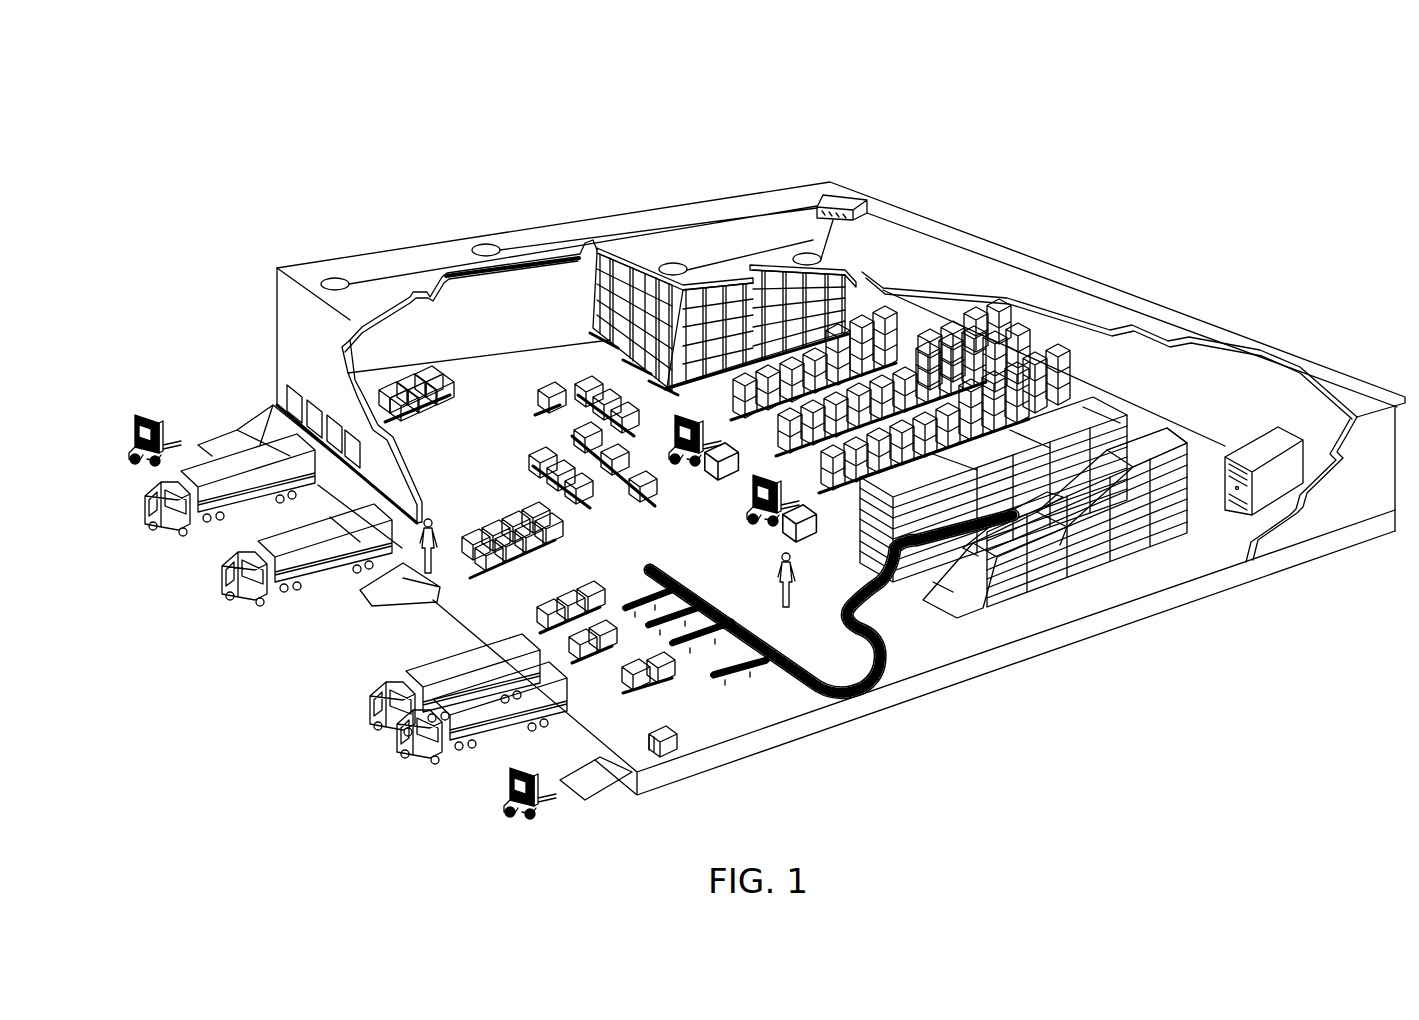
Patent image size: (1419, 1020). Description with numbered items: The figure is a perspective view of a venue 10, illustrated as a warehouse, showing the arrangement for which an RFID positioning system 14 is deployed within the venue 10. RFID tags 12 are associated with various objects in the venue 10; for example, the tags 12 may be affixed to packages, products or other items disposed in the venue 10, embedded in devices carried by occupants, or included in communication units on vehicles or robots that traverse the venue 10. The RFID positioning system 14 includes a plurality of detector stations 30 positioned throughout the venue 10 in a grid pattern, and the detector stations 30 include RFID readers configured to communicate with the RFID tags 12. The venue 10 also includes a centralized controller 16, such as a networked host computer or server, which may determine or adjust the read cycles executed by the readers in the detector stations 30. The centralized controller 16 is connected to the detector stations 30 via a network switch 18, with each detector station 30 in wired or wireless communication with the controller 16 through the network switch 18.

The venue 10 is at (1019, 236).
The RFID tags 12 is at (540, 411).
The RFID positioning system 14 is at (885, 243).
The centralized controller 16 is at (1292, 433).
The network switch 18 is at (843, 211).
The detector stations 30 is at (777, 99).